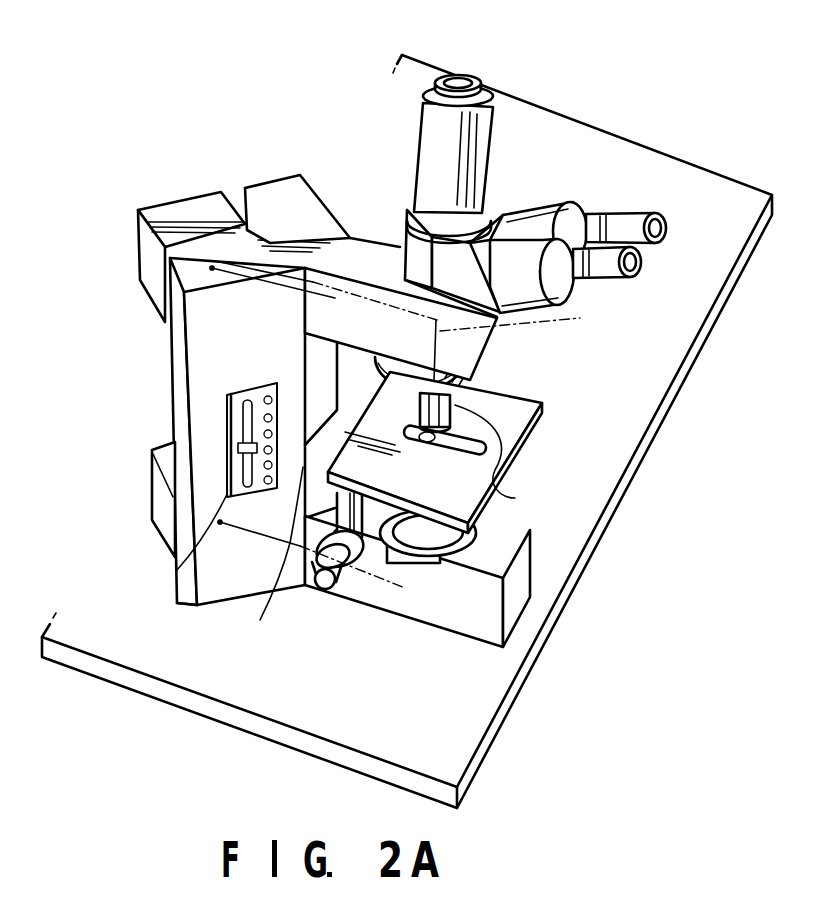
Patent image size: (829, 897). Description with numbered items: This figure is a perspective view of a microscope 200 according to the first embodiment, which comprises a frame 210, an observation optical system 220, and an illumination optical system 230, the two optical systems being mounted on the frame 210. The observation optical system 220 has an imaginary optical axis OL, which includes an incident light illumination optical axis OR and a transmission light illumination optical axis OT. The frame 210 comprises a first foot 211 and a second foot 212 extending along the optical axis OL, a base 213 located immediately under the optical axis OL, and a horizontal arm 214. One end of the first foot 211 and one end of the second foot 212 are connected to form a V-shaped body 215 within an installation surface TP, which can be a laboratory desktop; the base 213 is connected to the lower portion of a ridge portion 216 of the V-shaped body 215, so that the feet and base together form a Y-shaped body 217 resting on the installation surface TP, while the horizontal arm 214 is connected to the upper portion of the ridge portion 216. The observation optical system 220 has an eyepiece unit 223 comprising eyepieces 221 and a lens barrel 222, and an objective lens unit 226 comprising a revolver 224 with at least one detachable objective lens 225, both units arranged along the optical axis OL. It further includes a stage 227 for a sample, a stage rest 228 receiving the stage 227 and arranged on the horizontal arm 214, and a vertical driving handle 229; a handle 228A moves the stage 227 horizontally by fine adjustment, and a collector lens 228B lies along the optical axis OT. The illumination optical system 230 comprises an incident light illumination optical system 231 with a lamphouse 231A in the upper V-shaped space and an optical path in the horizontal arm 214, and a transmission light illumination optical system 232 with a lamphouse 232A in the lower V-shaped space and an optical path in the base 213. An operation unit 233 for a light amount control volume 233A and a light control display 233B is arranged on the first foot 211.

The microscope 200 is at (317, 186).
The frame 210 is at (185, 360).
The first foot 211 is at (197, 420).
The second foot 212 is at (281, 186).
The base 213 is at (473, 632).
The horizontal arm 214 is at (372, 240).
The V-shaped body 215 is at (243, 192).
The ridge portion 216 is at (315, 352).
The Y-shaped body 217 is at (207, 603).
The observation optical system 220 is at (512, 206).
The eyepieces 221 is at (632, 224).
The lens barrel 222 is at (493, 172).
The eyepiece unit 223 is at (505, 200).
The revolver 224 is at (468, 395).
The objective lens 225 is at (488, 450).
The objective lens unit 226 is at (556, 327).
The stage 227 is at (525, 418).
The stage rest 228 is at (358, 559).
The handle 228A is at (383, 560).
The collector lens 228B is at (445, 572).
The vertical driving handle 229 is at (323, 590).
The illumination optical system 230 is at (140, 247).
The incident light illumination optical system 231 is at (555, 315).
The lamphouse 231A is at (180, 210).
The transmission light illumination optical system 232 is at (423, 580).
The lamphouse 232A is at (153, 505).
The operation unit 233 is at (177, 570).
The light amount control volume 233A is at (230, 472).
The light control display 233B is at (227, 393).
The incident light illumination optical axis OR is at (352, 248).
The optical axis OL is at (507, 500).
The transmission light illumination optical axis OT is at (398, 592).
The installation surface TP is at (662, 357).